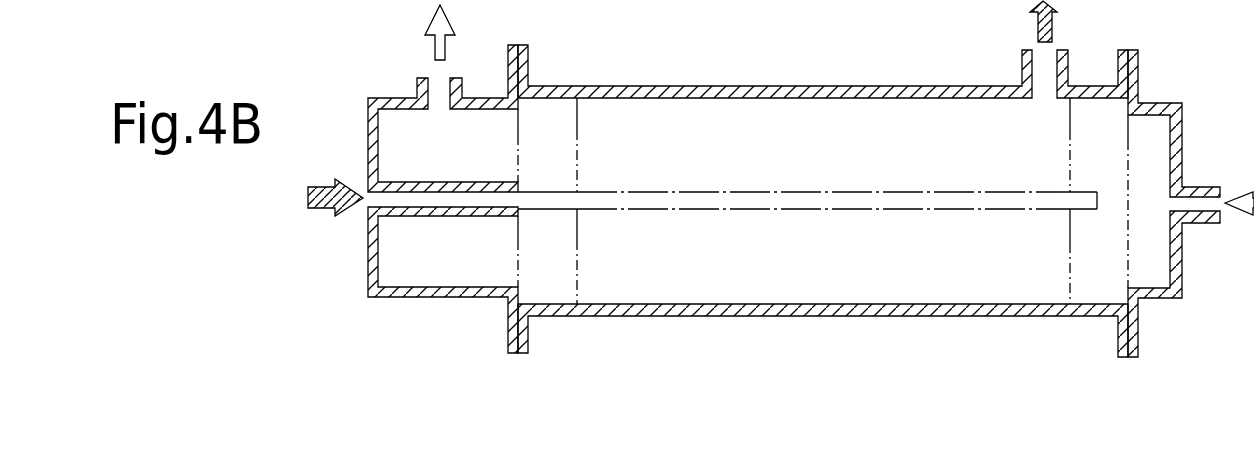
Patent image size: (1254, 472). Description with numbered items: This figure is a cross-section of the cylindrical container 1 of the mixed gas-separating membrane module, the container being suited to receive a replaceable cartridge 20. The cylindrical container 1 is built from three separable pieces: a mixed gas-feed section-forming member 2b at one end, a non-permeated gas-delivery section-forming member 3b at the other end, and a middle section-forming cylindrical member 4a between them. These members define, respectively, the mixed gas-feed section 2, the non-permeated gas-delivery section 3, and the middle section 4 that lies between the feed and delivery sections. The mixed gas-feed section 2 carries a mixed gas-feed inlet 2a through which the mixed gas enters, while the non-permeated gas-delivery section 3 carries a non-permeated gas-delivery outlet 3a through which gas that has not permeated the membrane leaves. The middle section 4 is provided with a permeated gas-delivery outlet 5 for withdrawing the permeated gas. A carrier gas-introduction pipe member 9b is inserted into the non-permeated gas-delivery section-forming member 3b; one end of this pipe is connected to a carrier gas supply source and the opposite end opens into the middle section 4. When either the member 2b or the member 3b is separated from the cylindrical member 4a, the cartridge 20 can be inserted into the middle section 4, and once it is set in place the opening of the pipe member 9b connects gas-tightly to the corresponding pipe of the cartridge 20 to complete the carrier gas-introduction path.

The cylindrical container 1 is at (877, 76).
The mixed gas-feed section 2 is at (1157, 140).
The mixed gas-feed inlet 2a is at (1205, 203).
The mixed gas-feed section-forming member 2b is at (1182, 155).
The non-permeated gas-delivery section 3 is at (400, 120).
The non-permeated gas-delivery outlet 3a is at (443, 80).
The non-permeated gas-delivery section-forming member 3b is at (370, 147).
The middle section 4 is at (677, 110).
The middle section-forming cylindrical member 4a is at (783, 96).
The permeated gas-delivery outlet 5 is at (1020, 70).
The carrier gas-introduction pipe member 9b is at (462, 209).
The cartridge 20 is at (764, 293).